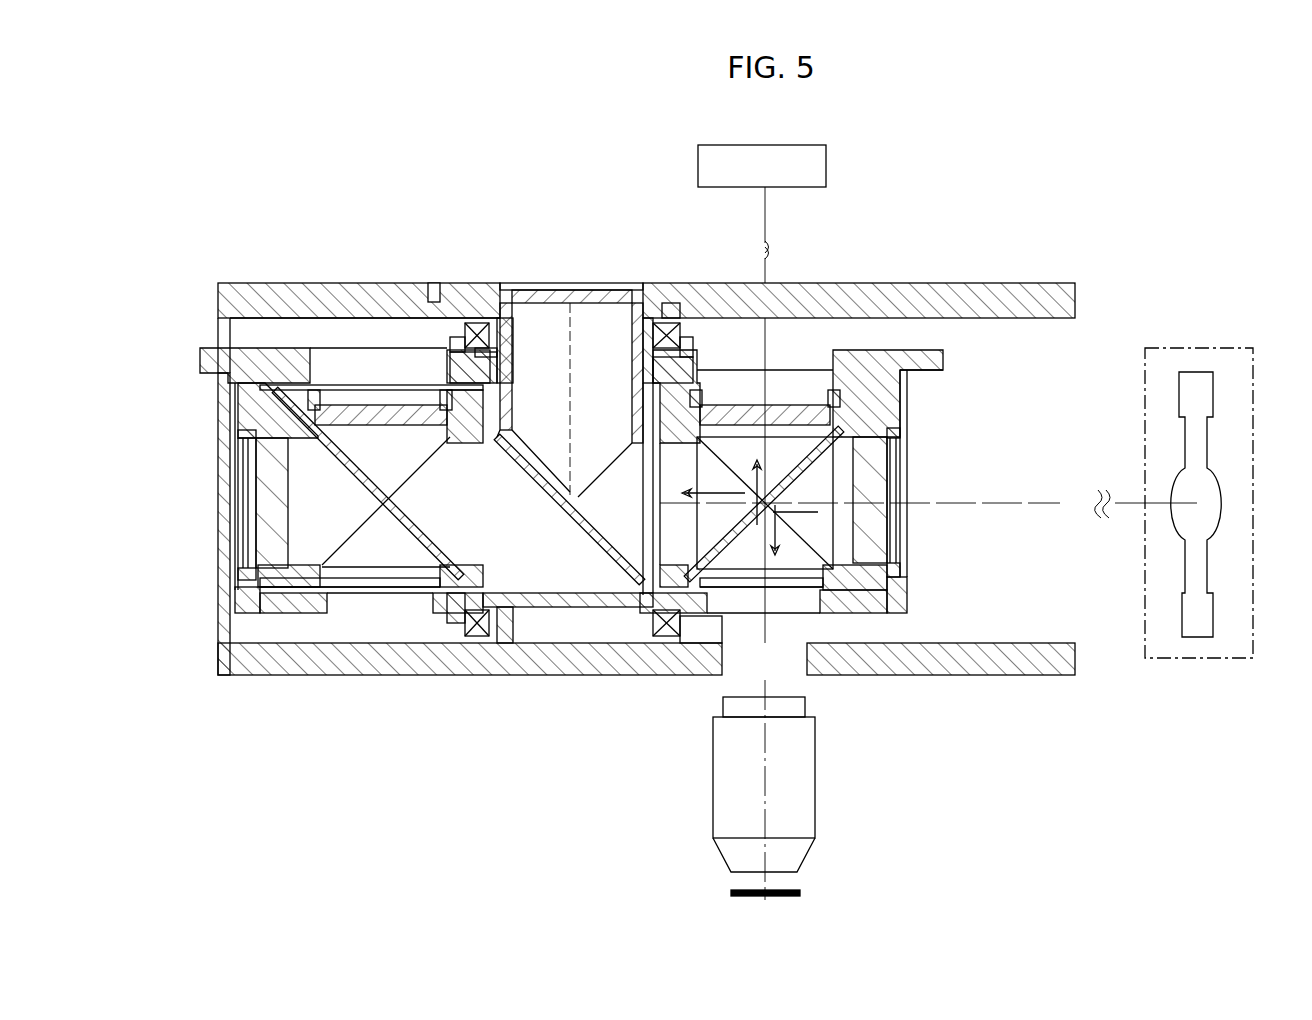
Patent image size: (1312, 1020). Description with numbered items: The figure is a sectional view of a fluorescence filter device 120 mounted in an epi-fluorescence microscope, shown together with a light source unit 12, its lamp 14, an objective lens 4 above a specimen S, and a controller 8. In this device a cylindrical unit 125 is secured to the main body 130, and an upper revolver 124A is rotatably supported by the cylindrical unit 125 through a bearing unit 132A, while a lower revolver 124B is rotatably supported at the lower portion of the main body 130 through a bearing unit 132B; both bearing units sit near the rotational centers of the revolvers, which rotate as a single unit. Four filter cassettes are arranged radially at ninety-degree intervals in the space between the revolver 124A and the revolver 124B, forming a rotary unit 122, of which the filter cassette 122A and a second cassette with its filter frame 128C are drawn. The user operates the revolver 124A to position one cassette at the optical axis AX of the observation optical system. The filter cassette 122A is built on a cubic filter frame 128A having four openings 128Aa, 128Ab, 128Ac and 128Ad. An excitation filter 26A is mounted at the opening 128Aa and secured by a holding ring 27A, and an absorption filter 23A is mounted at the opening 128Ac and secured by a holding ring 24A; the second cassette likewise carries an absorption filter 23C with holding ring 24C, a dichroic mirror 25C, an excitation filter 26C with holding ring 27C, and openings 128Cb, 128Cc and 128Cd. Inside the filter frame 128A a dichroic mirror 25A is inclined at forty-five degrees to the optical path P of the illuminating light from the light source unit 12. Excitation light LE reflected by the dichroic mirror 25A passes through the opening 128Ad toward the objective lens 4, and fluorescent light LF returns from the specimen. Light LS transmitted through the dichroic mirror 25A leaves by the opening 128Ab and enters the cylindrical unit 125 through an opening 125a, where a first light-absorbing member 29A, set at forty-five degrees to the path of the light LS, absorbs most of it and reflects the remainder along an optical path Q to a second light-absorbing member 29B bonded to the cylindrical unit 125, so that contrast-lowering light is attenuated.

The objective lens 4 is at (816, 818).
The controller 8 is at (826, 160).
The light source unit 12 is at (1213, 343).
The lamp 14 is at (1207, 437).
The fluorescence filter device 120 is at (1018, 256).
The rotary optical unit 122 is at (494, 538).
The filter cassette 122A is at (920, 596).
The revolver 124A is at (945, 362).
The revolver 124B is at (274, 676).
The cylindrical unit 125 is at (570, 364).
The opening 125a is at (646, 600).
The filter frame 128A is at (825, 471).
The opening 128Aa is at (908, 517).
The opening 128Ab is at (663, 600).
The opening 128Ac is at (796, 380).
The opening 128Ad is at (778, 586).
The rotary holder C 128C is at (384, 482).
The bottom of holder C 128Cb is at (454, 590).
The top of holder C 128Cc is at (336, 384).
The side plate of holder C 128Cd is at (243, 522).
The main body 130 is at (932, 283).
The bearing unit 132A is at (478, 322).
The bearing unit 132B is at (490, 640).
The absorption filter 23A is at (838, 403).
The lens C 23C is at (372, 428).
The holding ring 24A is at (715, 392).
The lens frame C 24C is at (410, 394).
The dichroic mirror 25A is at (764, 504).
The beam splitter prism C 25C is at (398, 514).
The excitation filter 26A is at (880, 548).
The filter C 26C is at (270, 550).
The holding ring 27A is at (907, 462).
The retaining ring C 27C is at (235, 470).
The first light-absorbing member 29A is at (535, 472).
The second light-absorbing member 29B is at (590, 300).
The optical axis AX is at (770, 757).
The optical path P is at (1003, 503).
The optical path Q is at (578, 340).
The light LS is at (713, 479).
The fluorescent light LF is at (747, 479).
The excitation light LE is at (805, 530).
The specimen S is at (805, 892).